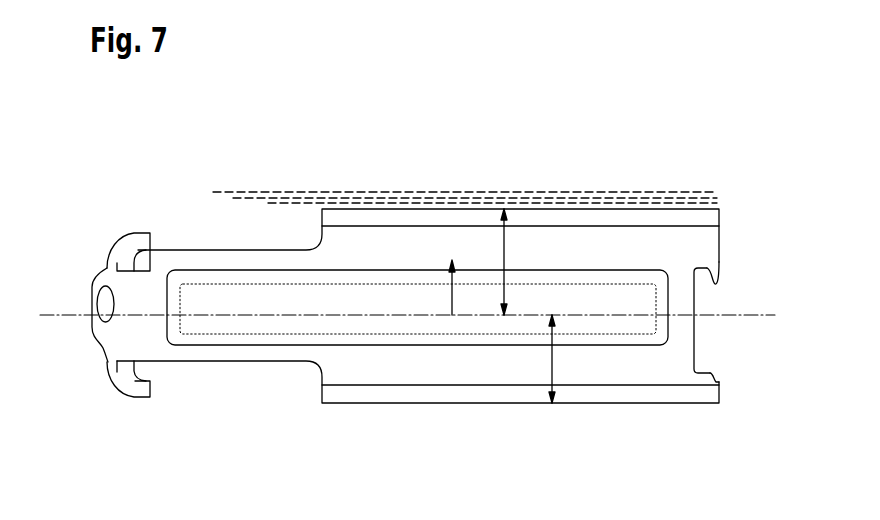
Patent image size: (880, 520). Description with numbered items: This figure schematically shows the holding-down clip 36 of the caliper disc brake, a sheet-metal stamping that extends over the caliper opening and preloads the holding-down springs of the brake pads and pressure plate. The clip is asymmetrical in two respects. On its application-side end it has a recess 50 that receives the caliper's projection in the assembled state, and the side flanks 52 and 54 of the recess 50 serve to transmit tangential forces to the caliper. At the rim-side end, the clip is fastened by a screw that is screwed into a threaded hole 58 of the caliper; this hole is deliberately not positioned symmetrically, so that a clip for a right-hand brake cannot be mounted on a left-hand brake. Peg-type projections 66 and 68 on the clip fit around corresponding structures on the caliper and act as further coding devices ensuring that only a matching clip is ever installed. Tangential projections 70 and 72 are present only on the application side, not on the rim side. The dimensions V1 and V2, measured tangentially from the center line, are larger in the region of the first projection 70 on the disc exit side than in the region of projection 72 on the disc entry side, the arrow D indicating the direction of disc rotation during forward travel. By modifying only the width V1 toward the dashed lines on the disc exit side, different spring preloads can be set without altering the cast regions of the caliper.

The holding-down clip 36 is at (190, 238).
The recess 50 is at (728, 337).
The side flank 52 is at (718, 277).
The side flank 54 is at (715, 372).
The threaded hole 58 is at (100, 298).
The peg-type projection 66 is at (133, 232).
The peg-type projection 68 is at (133, 397).
The tangential projection 70 is at (381, 208).
The tangential projection 72 is at (333, 405).
The width dimension V1 is at (516, 262).
The width dimension V2 is at (567, 359).
The direction of rotation D is at (451, 298).